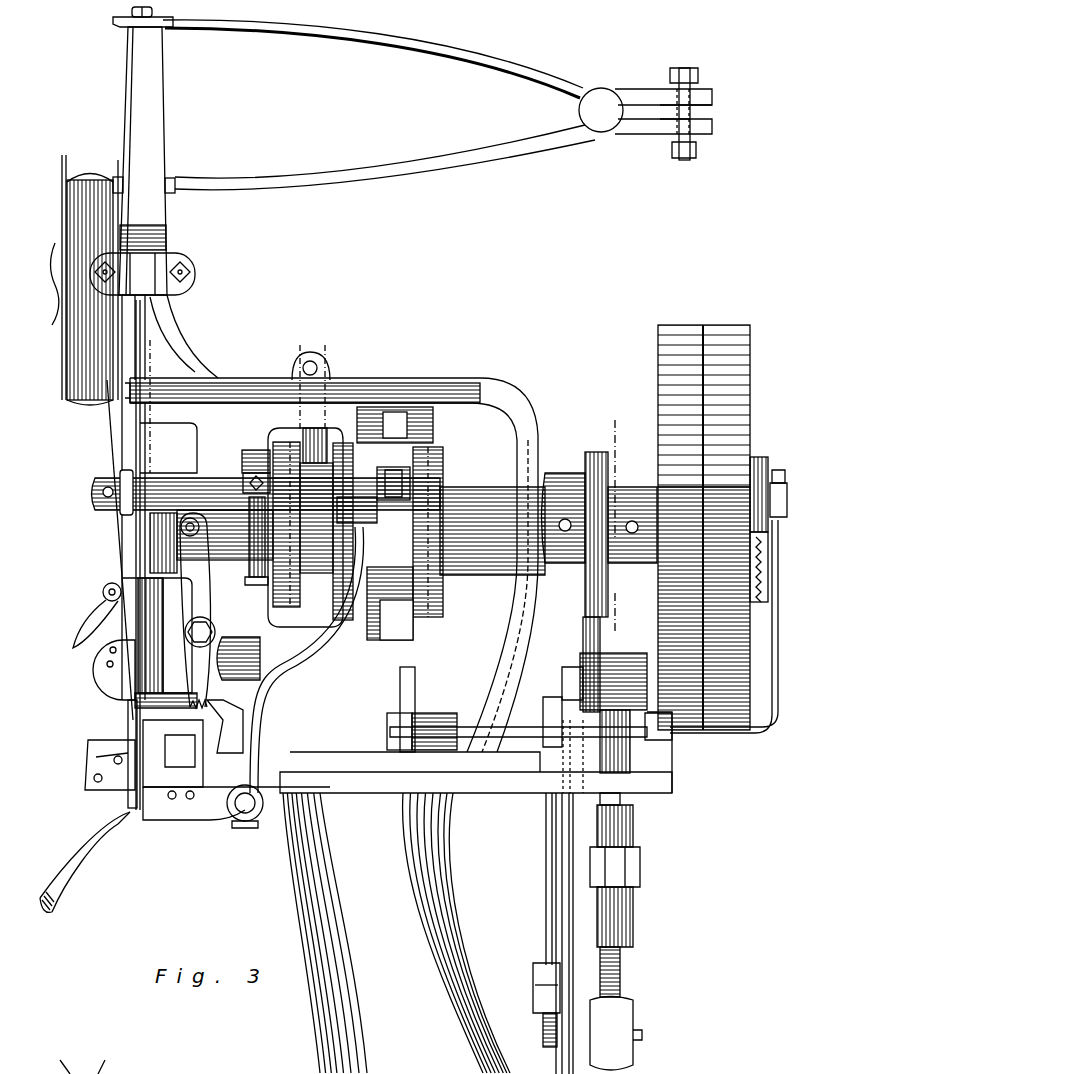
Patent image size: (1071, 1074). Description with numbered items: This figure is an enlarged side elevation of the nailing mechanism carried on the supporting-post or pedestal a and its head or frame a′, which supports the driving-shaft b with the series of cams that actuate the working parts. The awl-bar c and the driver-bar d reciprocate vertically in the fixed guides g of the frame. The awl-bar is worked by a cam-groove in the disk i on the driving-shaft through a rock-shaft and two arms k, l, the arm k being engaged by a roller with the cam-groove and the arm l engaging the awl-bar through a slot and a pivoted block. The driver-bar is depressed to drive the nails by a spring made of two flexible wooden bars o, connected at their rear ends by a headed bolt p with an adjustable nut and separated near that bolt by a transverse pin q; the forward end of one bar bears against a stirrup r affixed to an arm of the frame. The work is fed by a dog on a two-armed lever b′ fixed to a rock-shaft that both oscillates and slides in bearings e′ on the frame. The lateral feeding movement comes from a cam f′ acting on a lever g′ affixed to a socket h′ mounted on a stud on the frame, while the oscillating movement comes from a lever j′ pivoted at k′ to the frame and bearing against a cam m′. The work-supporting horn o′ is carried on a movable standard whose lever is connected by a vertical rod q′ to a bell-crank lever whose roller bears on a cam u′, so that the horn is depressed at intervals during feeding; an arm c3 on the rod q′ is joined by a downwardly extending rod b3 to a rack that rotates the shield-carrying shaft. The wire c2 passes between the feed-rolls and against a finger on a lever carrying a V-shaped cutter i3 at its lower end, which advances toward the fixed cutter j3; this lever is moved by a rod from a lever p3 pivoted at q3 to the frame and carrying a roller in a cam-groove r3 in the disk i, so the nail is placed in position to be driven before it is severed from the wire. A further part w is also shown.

The stirrup r is at (153, 118).
The flexible wooden bars o is at (348, 55).
The transverse pin q is at (601, 110).
The headed bolt p is at (690, 112).
The driver-bar d is at (66, 170).
The fixed guides g is at (330, 501).
The pivot q3 is at (318, 368).
The awl-bar c is at (150, 450).
The arm l is at (128, 555).
The wire c2 is at (110, 432).
The driving-shaft b is at (375, 543).
The disk i is at (287, 445).
The lever p3 is at (320, 460).
The cam-groove r3 is at (345, 478).
The cam f′ is at (358, 482).
The cam m′ is at (150, 545).
The arm k is at (258, 575).
The pivot k′ is at (195, 640).
The lever j′ is at (212, 676).
The socket h′ is at (250, 650).
The lever g′ is at (300, 700).
The head or frame a′ is at (502, 596).
The cam u′ is at (585, 465).
The two-armed lever b′ is at (220, 805).
The bearings e′ is at (270, 803).
The cutter j3 is at (95, 735).
The V-shaped cutter i3 is at (147, 753).
The needle w is at (128, 798).
The work-supporting horn o′ is at (105, 852).
The supporting-post or pedestal a is at (396, 933).
The rod b3 is at (547, 883).
The arm c3 is at (533, 985).
The vertical rod q′ is at (620, 975).